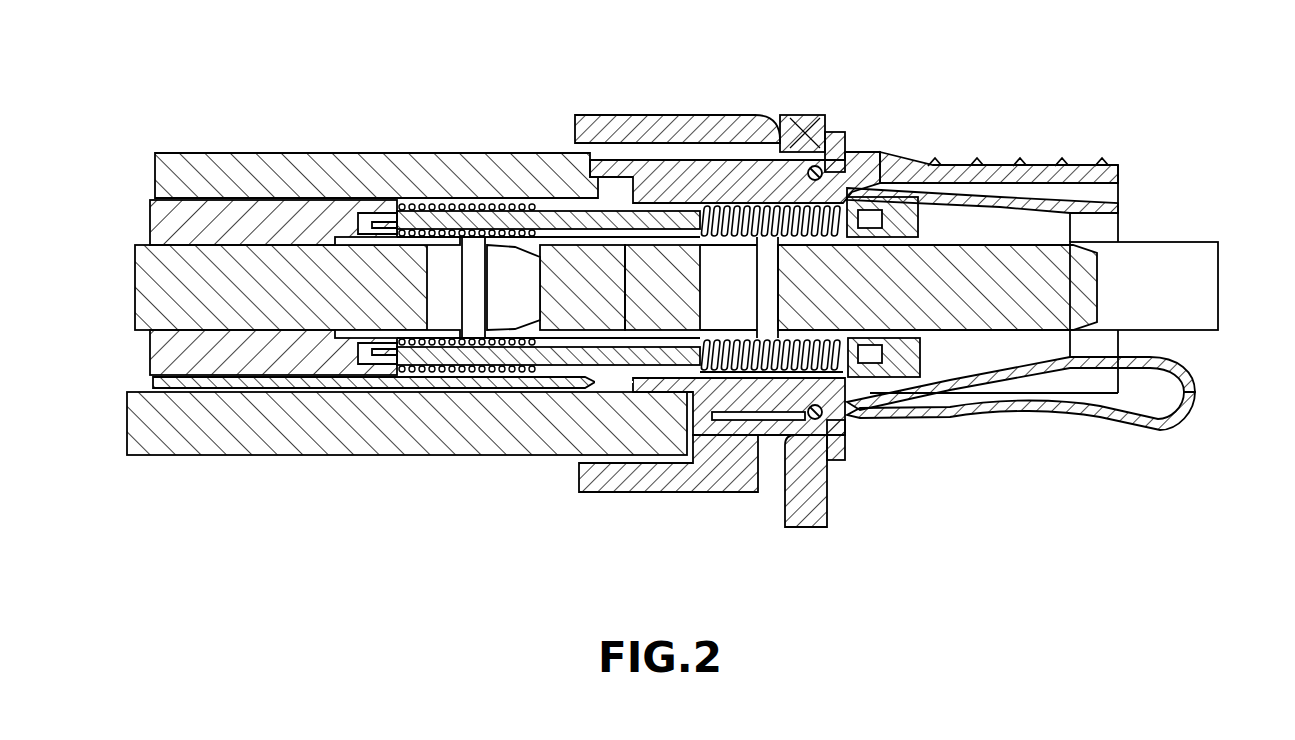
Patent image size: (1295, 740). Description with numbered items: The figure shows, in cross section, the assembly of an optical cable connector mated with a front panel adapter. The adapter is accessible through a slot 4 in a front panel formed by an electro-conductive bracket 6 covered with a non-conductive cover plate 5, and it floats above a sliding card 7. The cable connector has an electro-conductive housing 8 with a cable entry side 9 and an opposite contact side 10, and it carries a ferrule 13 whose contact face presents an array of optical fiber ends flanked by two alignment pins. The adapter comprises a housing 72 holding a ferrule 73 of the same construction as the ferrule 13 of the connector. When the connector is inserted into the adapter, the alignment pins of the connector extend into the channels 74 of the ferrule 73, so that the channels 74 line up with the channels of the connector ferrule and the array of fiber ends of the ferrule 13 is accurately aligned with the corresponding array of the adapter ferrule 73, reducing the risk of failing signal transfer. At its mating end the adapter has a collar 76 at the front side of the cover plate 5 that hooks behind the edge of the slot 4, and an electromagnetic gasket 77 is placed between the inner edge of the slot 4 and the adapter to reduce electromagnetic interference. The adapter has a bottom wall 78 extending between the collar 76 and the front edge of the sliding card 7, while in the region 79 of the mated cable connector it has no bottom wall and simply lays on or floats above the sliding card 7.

The slot 4 is at (858, 428).
The cover plate 5 is at (815, 128).
The bracket 6 is at (670, 128).
The sliding card 7 is at (205, 445).
The housing 8 is at (1100, 170).
The cable entry side 9 is at (1192, 194).
The contact side 10 is at (620, 389).
The ferrule 13 is at (680, 255).
The housing 72 is at (279, 165).
The ferrule 73 is at (560, 255).
The channels 74 is at (447, 207).
The collar 76 is at (840, 132).
The electromagnetic gasket 77 is at (805, 445).
The bottom wall 78 is at (722, 430).
The region 79 is at (640, 412).